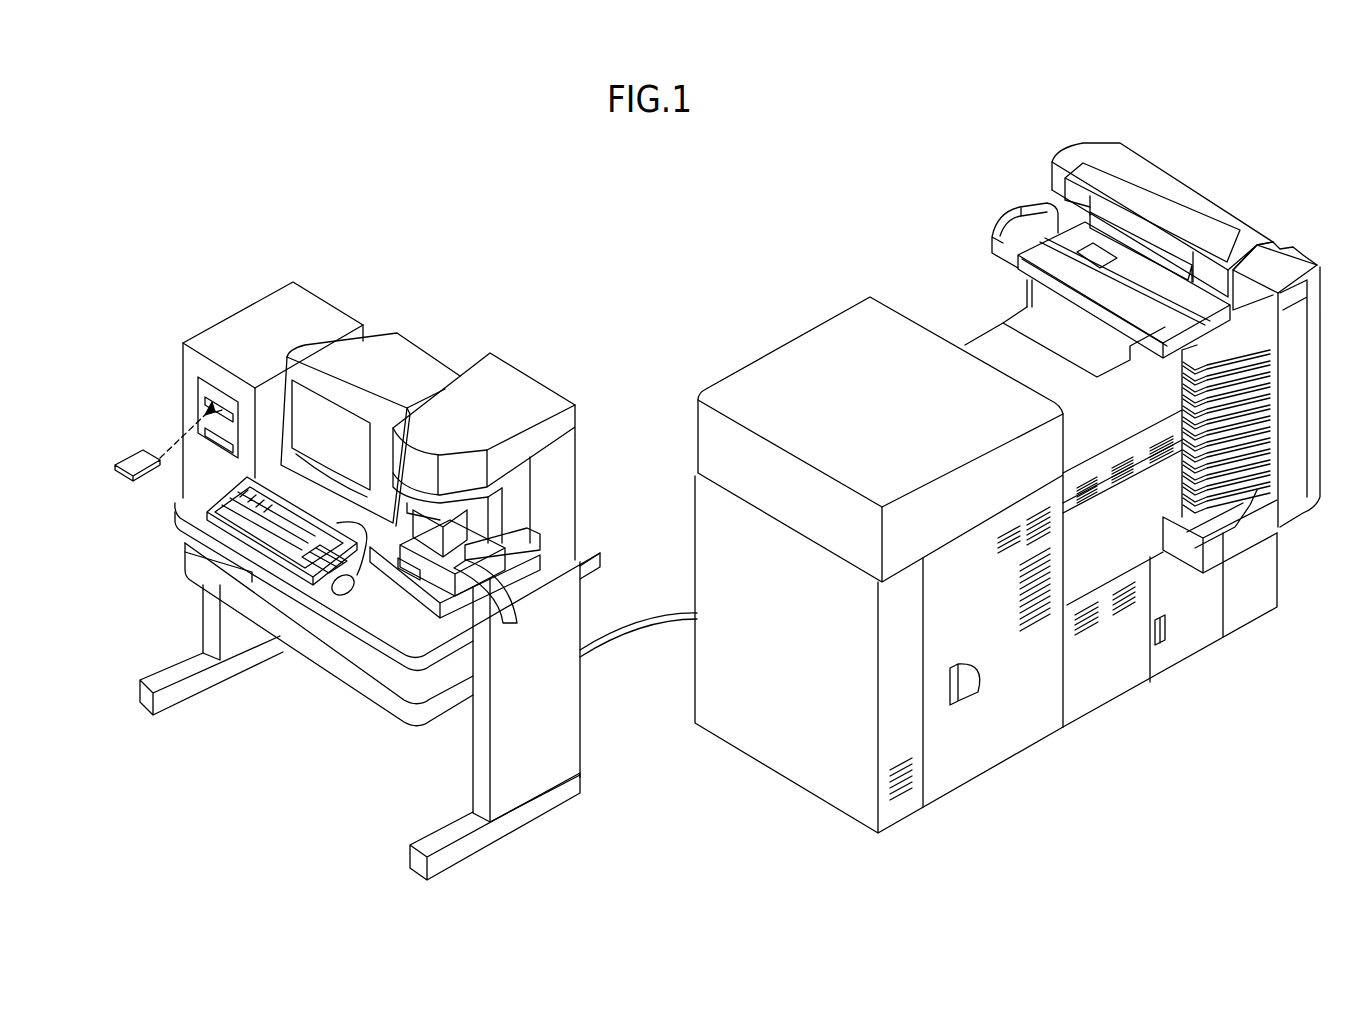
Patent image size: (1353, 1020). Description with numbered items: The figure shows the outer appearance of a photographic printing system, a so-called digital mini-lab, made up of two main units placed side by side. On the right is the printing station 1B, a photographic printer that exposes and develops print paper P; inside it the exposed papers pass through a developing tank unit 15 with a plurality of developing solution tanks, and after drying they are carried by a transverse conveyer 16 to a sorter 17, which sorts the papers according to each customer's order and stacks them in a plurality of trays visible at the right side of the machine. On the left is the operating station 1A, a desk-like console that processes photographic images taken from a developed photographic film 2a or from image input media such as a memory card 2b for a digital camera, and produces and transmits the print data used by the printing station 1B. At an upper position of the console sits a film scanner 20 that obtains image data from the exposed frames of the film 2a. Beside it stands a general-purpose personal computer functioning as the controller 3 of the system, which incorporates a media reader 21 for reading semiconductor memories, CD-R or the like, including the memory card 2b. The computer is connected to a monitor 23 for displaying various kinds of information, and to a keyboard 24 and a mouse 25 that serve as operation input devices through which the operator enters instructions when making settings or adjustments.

The operating station 1A is at (467, 323).
The printing station 1B is at (778, 323).
The developed photographic film 2a is at (507, 623).
The memory card 2b is at (115, 472).
The controller 3 is at (253, 325).
The developing tank unit 15 is at (1120, 660).
The transverse conveyer 16 is at (1050, 248).
The sorter 17 is at (1285, 245).
The film scanner 20 is at (507, 387).
The media reader 21 is at (200, 405).
The monitor 23 is at (400, 345).
The keyboard 24 is at (287, 557).
The mouse 25 is at (340, 587).
The print paper P is at (1100, 255).